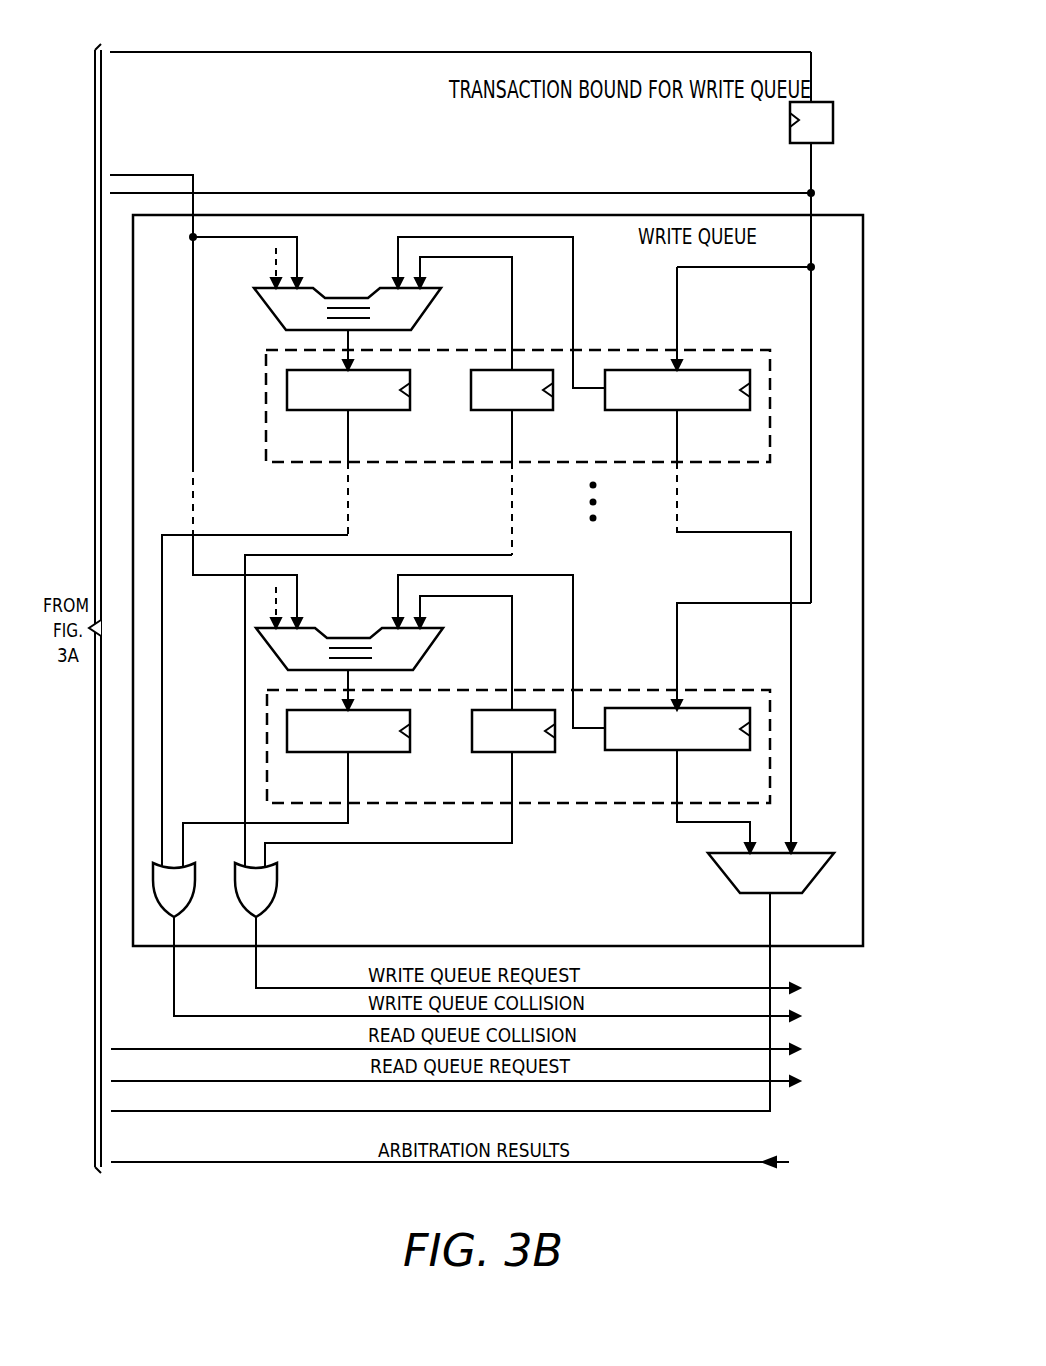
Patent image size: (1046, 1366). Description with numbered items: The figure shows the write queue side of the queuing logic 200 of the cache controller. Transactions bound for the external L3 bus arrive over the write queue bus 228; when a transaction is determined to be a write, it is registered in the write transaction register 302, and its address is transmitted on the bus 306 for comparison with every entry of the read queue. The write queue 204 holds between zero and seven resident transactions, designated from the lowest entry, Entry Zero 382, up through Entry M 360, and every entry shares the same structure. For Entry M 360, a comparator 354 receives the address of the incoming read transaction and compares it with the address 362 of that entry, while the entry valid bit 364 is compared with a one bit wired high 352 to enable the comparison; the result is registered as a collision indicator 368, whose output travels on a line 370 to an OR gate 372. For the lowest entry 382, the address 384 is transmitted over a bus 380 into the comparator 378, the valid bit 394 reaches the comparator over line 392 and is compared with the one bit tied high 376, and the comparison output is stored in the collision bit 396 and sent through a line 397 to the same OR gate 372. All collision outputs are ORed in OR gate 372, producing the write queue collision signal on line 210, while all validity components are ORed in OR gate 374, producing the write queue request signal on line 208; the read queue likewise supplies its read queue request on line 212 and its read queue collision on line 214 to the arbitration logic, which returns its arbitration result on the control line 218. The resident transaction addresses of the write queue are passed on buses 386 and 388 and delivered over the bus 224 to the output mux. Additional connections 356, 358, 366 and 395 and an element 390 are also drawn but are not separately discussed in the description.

The queuing logic 200 is at (679, 1212).
The write queue 204 is at (833, 948).
The write queue request signal line 208 is at (257, 975).
The write queue collision signal line 210 is at (174, 985).
The read queue request signal line 212 is at (779, 1083).
The read queue collision signal line 214 is at (144, 1049).
The mux control line 218 is at (192, 1167).
The write queue output bus 224 is at (771, 912).
The write queue bus 228 is at (337, 52).
The write transaction register 302 is at (790, 136).
The bus 306 is at (407, 193).
The one bit wired high 352 is at (272, 268).
The comparator 354 is at (352, 297).
The address line 356 is at (574, 272).
The valid line 358 is at (468, 258).
The Entry M 360 is at (727, 350).
The address 362 is at (657, 411).
The entry valid bit 364 is at (492, 411).
The valid output line 366 is at (427, 555).
The collision indicator 368 is at (327, 411).
The line 370 is at (236, 535).
The OR gate 372 is at (189, 905).
The OR gate 374 is at (277, 875).
The one bit tied high 376 is at (270, 608).
The comparator 378 is at (358, 638).
The bus 380 is at (550, 575).
The Entry 0 382 is at (712, 688).
The address 384 is at (657, 750).
The bus 386 is at (677, 815).
The bus 388 is at (738, 532).
The multiplexer 390 is at (720, 870).
The line 392 is at (463, 597).
The valid bit 394 is at (492, 752).
The valid output line 395 is at (476, 843).
The collision bit 396 is at (327, 752).
The line 397 is at (350, 770).